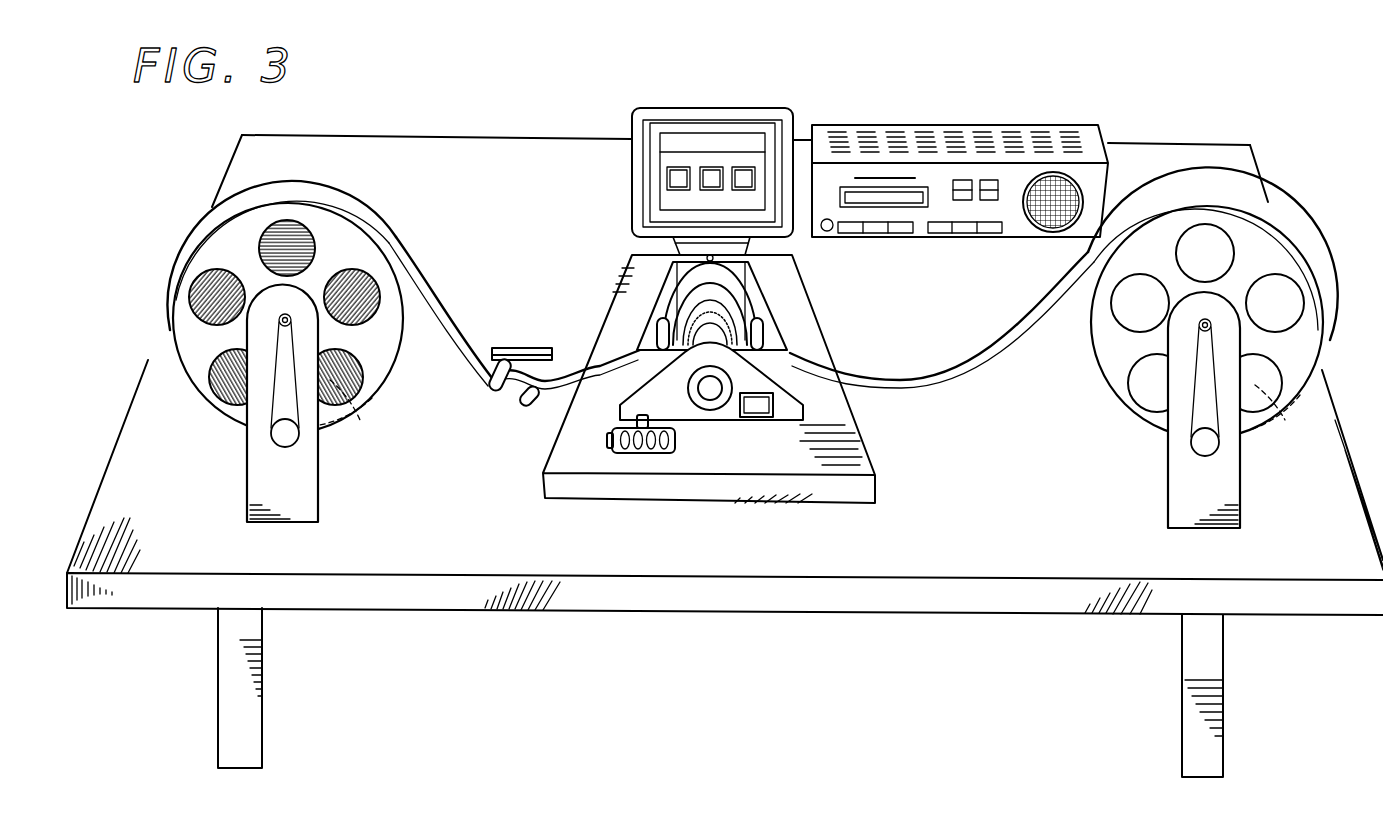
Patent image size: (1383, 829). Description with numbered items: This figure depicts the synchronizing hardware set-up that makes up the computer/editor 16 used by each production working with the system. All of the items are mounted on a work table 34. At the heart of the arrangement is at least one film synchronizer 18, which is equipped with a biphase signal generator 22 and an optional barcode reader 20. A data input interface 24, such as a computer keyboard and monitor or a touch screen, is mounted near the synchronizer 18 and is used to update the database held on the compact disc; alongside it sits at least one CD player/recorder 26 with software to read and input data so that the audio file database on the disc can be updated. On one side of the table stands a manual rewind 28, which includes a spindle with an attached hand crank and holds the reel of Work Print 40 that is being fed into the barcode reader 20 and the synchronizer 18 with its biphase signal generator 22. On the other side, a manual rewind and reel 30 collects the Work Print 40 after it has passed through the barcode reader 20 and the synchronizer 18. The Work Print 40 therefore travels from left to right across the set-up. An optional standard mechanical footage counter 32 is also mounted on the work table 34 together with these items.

The computer/editor 16 is at (493, 678).
The film synchronizer 18 is at (828, 467).
The barcode reader 20 is at (523, 346).
The biphase signal generator 22 is at (757, 408).
The data input interface 24 is at (632, 193).
The CD player/recorder 26 is at (962, 125).
The manual rewind 28 is at (321, 480).
The manual rewind and reel 30 is at (1167, 493).
The mechanical footage counter 32 is at (633, 453).
The work table 34 is at (748, 600).
The Work Print 40 is at (1297, 242).